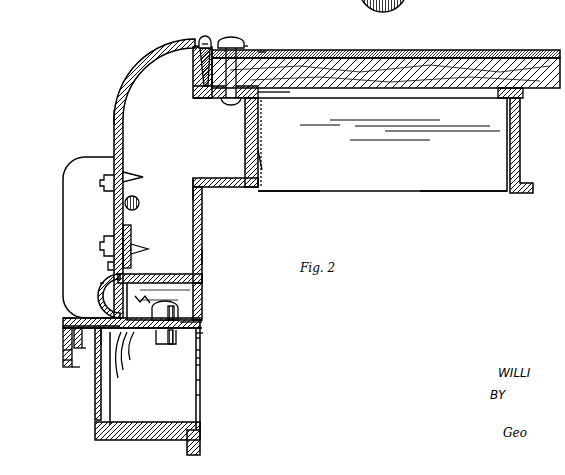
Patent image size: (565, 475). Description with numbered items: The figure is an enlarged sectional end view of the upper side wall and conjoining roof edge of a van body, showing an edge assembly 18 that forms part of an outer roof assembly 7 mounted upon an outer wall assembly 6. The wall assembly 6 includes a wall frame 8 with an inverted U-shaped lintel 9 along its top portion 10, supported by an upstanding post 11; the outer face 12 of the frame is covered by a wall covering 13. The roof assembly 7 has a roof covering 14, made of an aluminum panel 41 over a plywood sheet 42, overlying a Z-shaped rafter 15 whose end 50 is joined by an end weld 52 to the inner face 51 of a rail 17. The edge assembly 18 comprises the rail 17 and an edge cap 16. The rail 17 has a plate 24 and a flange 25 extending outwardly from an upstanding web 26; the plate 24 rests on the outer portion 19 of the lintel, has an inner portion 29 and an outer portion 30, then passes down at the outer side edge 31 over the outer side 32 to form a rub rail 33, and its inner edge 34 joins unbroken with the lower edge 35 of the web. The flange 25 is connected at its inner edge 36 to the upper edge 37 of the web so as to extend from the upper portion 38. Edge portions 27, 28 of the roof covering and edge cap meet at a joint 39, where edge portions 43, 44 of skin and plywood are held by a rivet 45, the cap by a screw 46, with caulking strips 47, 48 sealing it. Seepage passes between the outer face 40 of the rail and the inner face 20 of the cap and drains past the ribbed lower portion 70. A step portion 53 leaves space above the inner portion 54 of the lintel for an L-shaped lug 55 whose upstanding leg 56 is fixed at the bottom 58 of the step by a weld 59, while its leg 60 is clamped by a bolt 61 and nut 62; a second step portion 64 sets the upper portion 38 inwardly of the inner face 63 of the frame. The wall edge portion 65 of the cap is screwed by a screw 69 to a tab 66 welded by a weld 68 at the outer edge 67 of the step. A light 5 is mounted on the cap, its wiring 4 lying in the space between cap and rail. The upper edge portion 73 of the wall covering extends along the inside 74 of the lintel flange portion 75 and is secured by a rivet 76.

The wiring 4 is at (140, 203).
The light 5 is at (90, 157).
The outer wall assembly 6 is at (200, 416).
The outer roof assembly 7 is at (460, 192).
The wall frame 8 is at (200, 401).
The lintel 9 is at (200, 352).
The top portion 10 is at (131, 342).
The post 11 is at (200, 386).
The outer face 12 is at (95, 428).
The wall covering 13 is at (95, 402).
The roof covering 14 is at (510, 58).
The rafter 15 is at (512, 194).
The edge cap 16 is at (127, 76).
The rail 17 is at (202, 203).
The edge assembly 18 is at (118, 100).
The outer portion 19 is at (78, 349).
The inner face 20 is at (125, 170).
The plate 24 is at (63, 322).
The flange 25 is at (193, 97).
The web 26 is at (202, 258).
The edge portion 27 is at (233, 42).
The roof edge portion 28 is at (195, 45).
The inner portion 29 is at (112, 375).
The outer portion 30 is at (70, 318).
The outer side edge 31 is at (63, 326).
The outer side 32 is at (63, 340).
The rub rail 33 is at (63, 355).
The inner edge 34 is at (119, 364).
The lower edge 35 is at (124, 356).
The inner edge 36 is at (241, 103).
The upper edge 37 is at (262, 100).
The upper portion 38 is at (262, 120).
The joint 39 is at (213, 41).
The outer face 40 is at (193, 183).
The aluminum panel 41 is at (375, 52).
The plywood sheet 42 is at (524, 93).
The edge portion 43 is at (262, 52).
The edge portion 44 is at (193, 75).
The rivet 45 is at (245, 46).
The screw 46 is at (204, 39).
The caulking strip 47 is at (193, 60).
The caulking strip 48 is at (193, 90).
The end 50 is at (295, 191).
The inner face 51 is at (262, 140).
The end weld 52 is at (262, 160).
The step portion 53 is at (165, 274).
The inner portion 54 is at (166, 345).
The lug 55 is at (205, 305).
The upstanding leg 56 is at (202, 285).
The bottom 58 is at (148, 300).
The weld 59 is at (176, 309).
The leg 60 is at (205, 329).
The bolt 61 is at (200, 338).
The nut 62 is at (203, 322).
The inner face 63 is at (200, 370).
The step portion 64 is at (240, 178).
The wall edge portion 65 is at (110, 196).
The tab 66 is at (133, 236).
The outer edge 67 is at (108, 266).
The weld 68 is at (142, 253).
The screw 69 is at (104, 240).
The ribbed lower portion 70 is at (101, 283).
The upper edge portion 73 is at (84, 350).
The inside 74 is at (65, 362).
The flange portion 75 is at (72, 368).
The rivet 76 is at (98, 296).